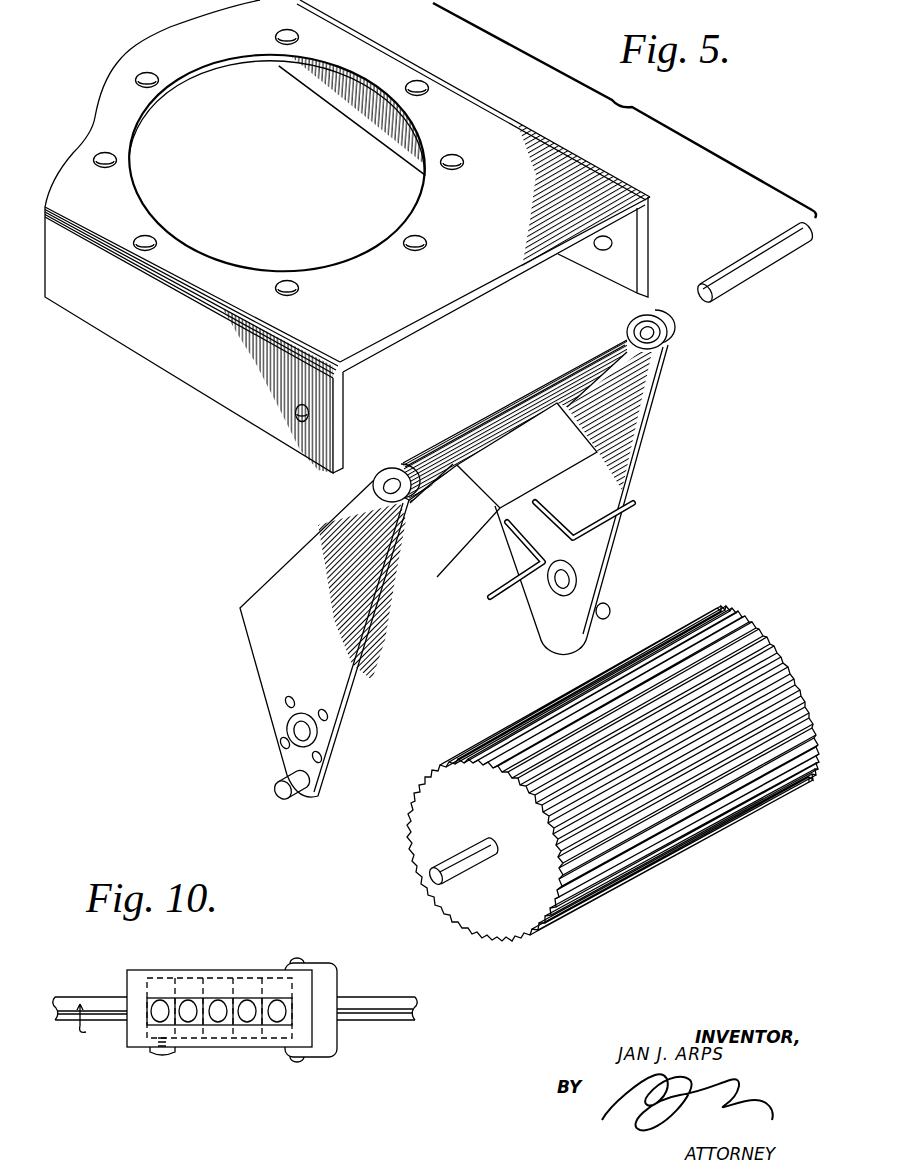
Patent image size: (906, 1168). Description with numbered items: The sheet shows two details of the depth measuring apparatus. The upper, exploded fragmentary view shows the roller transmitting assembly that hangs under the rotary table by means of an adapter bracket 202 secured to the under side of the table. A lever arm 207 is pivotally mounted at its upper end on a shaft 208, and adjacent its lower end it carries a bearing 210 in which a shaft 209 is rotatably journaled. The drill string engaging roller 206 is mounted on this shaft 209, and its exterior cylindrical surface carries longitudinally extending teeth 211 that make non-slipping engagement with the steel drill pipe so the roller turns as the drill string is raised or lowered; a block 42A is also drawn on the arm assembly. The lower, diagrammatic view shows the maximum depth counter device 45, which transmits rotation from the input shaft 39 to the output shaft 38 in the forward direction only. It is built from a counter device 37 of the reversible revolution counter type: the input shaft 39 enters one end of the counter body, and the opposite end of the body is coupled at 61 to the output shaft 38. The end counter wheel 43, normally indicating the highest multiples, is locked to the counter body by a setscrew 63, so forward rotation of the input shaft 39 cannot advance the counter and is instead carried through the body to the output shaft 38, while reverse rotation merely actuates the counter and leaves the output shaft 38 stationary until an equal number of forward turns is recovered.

In FIG. 5, the adapter bracket 202 is at (450, 313).
In FIG. 5, the shaft 208 is at (740, 275).
In FIG. 5, the lever arm 207 is at (308, 546).
In FIG. 5, the bearing 210 is at (292, 726).
In FIG. 5, the block 42A is at (583, 443).
In FIG. 5, the teeth 211 is at (712, 825).
In FIG. 5, the drill string engaging roller 206 is at (473, 917).
In FIG. 5, the shaft 209 is at (448, 857).
In FIG. 10, the counter device 37 is at (152, 970).
In FIG. 10, the input shaft 39 is at (90, 1000).
In FIG. 10, the output shaft 38 is at (378, 998).
In FIG. 10, the coupling 61 is at (318, 963).
In FIG. 10, the end counter wheel 43 is at (152, 1004).
In FIG. 10, the setscrew 63 is at (168, 1054).
In FIG. 10, the maximum depth counter device 45 is at (228, 1061).